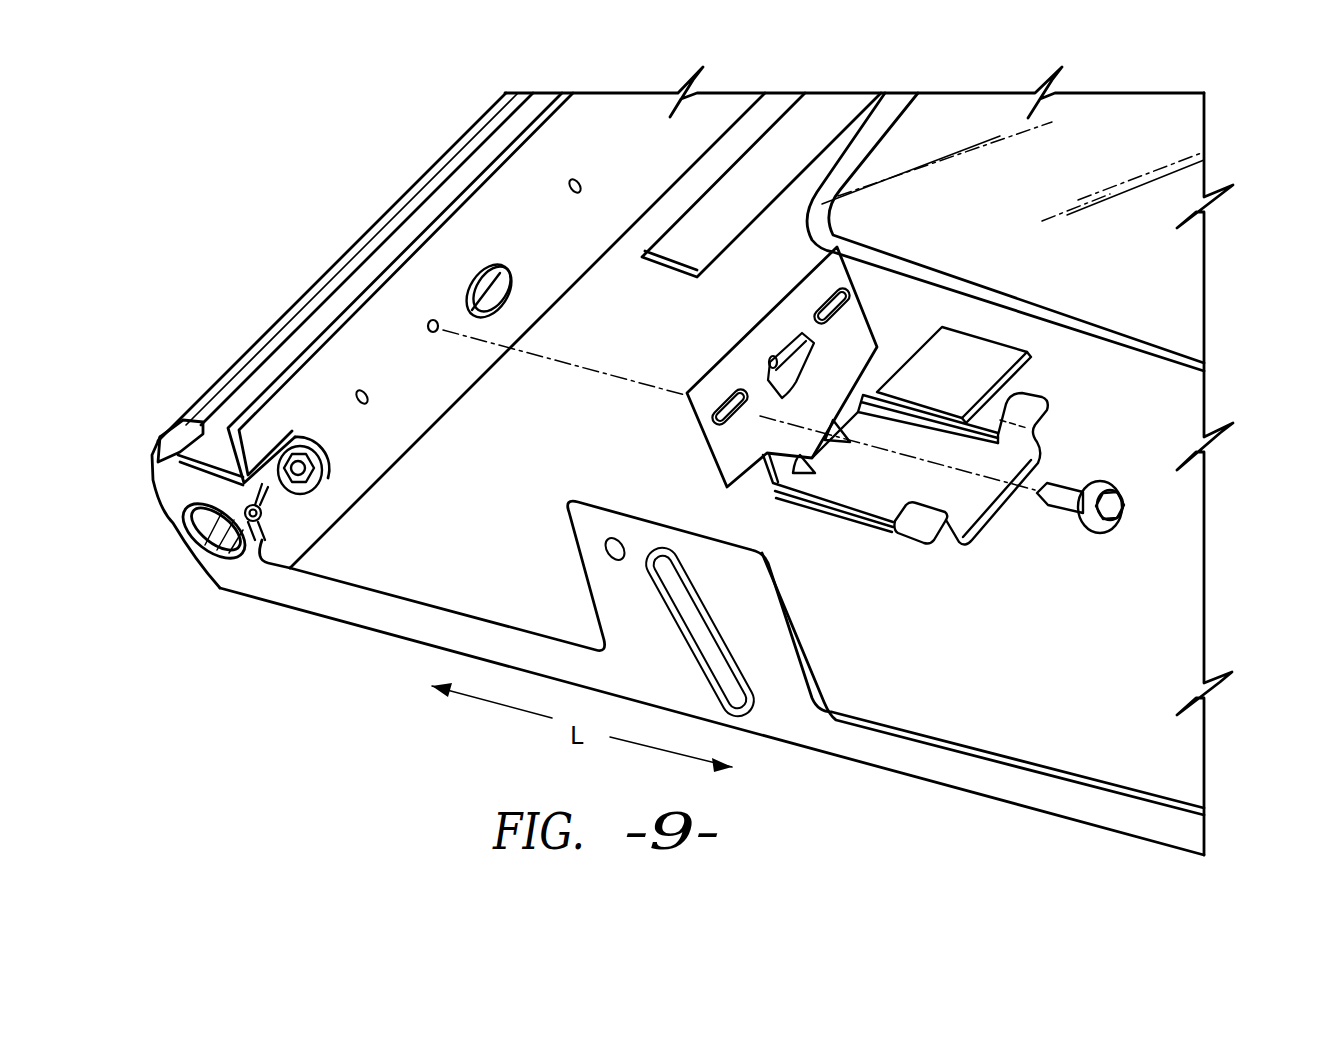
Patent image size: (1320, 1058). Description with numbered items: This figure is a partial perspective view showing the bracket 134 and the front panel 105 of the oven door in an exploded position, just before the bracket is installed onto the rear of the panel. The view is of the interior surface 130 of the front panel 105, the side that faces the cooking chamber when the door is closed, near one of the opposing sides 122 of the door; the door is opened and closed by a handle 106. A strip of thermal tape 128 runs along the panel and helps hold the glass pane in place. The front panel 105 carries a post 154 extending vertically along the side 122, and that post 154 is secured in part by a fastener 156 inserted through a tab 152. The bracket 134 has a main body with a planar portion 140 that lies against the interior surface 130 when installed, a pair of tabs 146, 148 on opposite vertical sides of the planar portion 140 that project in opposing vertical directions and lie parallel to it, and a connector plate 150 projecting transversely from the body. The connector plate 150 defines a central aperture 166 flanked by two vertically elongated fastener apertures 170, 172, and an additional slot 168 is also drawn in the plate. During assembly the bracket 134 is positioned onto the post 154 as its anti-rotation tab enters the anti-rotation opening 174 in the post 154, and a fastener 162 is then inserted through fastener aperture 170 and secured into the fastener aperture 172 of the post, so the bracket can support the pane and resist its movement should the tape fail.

The front panel 105 is at (983, 777).
The handle 106 is at (1122, 118).
The opposing side 122 is at (320, 273).
The thermal tape 128 is at (816, 117).
The interior surface 130 is at (487, 578).
The bracket 134 is at (960, 556).
The planar portion 140 is at (878, 423).
The tab 146 is at (993, 375).
The tab 148 is at (910, 522).
The connector plate 150 is at (850, 323).
The tab 152 is at (282, 508).
The post 154 is at (298, 395).
The fastener 156 is at (310, 477).
The fastener 162 is at (1112, 513).
The central aperture 166 is at (800, 370).
The slot 168 is at (825, 300).
The fastener aperture 170 is at (735, 405).
The fastener aperture 172 is at (440, 307).
The anti-rotation opening 174 is at (510, 263).